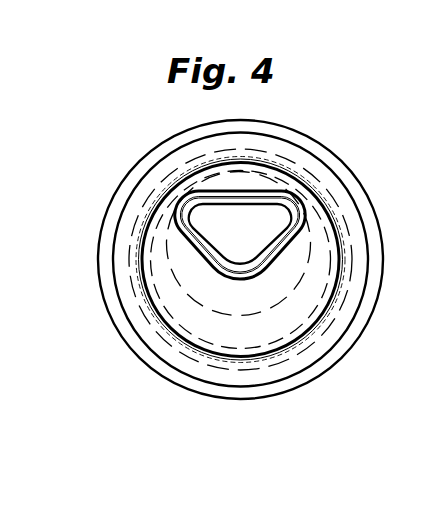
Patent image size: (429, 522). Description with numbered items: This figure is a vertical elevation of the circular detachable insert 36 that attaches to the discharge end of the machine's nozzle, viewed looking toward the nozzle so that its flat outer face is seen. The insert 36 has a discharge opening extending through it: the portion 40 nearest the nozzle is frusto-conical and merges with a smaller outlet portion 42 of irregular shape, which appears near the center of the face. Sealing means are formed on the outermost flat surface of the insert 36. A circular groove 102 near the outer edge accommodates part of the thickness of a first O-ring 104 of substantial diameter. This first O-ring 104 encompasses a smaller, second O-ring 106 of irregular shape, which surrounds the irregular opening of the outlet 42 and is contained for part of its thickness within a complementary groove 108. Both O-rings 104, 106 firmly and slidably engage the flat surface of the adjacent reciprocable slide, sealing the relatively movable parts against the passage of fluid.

The detachable insert 36 is at (153, 153).
The frusto-conical portion 40 is at (291, 297).
The outlet portion 42 is at (277, 234).
The circular groove 102 is at (335, 229).
The first O-ring 104 is at (308, 170).
The second O-ring 106 is at (254, 192).
The complementary groove 108 is at (192, 248).